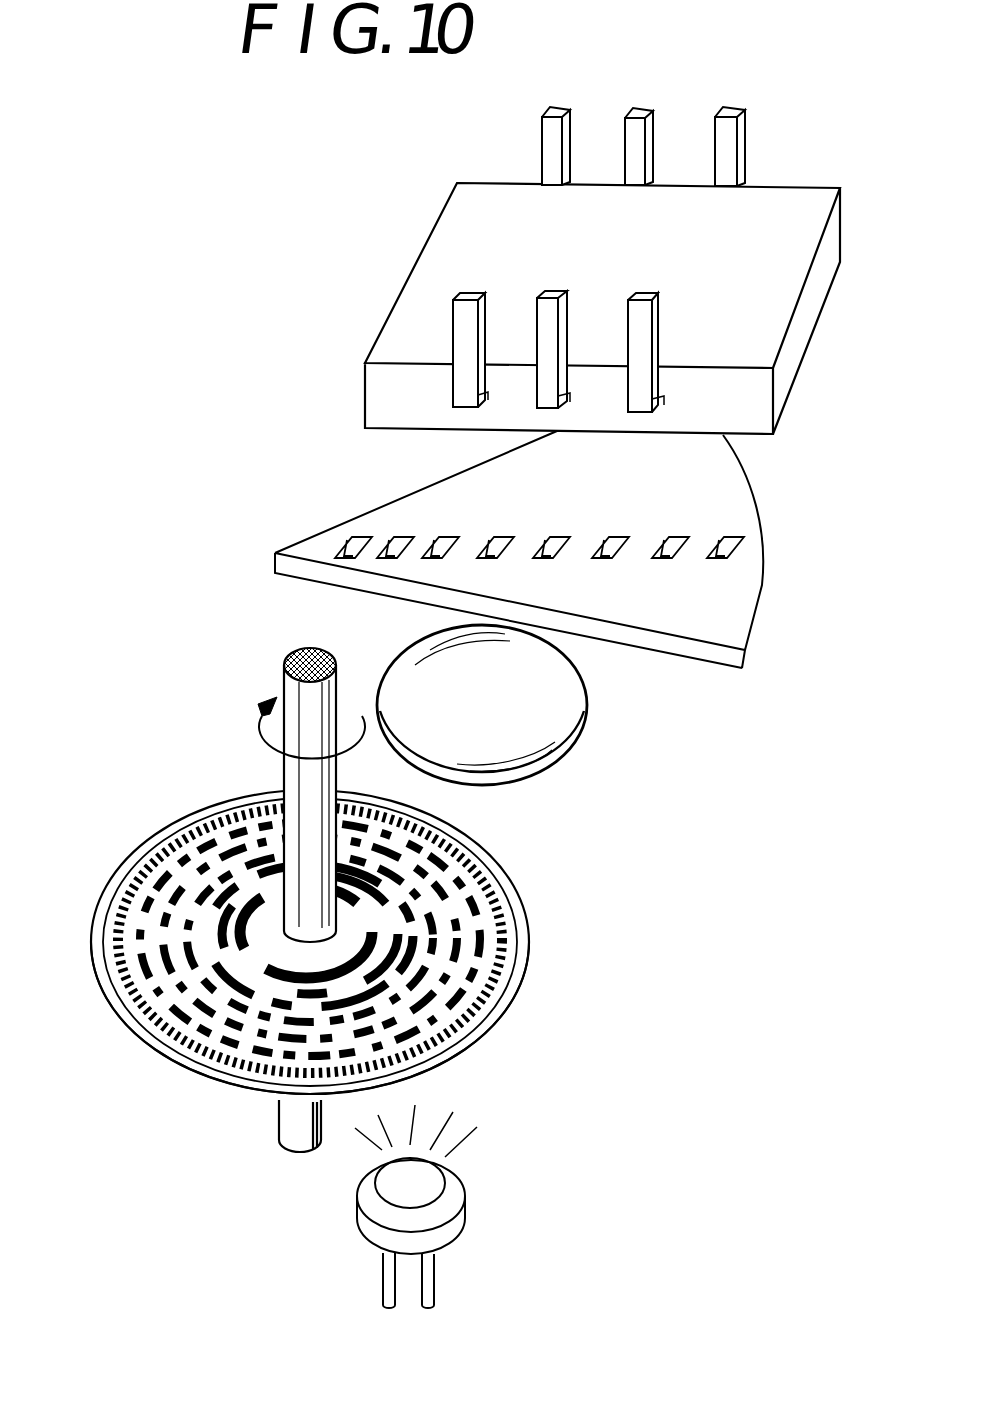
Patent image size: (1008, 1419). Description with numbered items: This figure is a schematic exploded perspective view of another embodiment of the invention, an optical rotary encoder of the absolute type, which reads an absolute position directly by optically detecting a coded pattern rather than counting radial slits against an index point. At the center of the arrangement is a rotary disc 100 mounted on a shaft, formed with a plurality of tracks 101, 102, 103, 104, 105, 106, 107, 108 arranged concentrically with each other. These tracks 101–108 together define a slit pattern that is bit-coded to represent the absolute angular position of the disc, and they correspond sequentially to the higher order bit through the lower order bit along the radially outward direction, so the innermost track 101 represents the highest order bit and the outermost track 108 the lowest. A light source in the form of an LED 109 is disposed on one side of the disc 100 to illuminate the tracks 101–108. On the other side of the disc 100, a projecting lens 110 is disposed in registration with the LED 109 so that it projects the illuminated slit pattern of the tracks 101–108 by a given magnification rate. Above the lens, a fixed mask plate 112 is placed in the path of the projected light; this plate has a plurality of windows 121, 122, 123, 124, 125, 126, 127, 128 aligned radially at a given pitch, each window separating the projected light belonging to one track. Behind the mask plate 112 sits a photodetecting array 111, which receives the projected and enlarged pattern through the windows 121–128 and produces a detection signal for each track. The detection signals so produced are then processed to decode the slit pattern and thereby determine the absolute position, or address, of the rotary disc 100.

The rotary disc 100 is at (522, 948).
The track 101 is at (373, 952).
The track 102 is at (242, 883).
The track 103 is at (222, 903).
The track 104 is at (192, 917).
The track 105 is at (170, 968).
The track 106 is at (190, 1010).
The track 107 is at (197, 1043).
The track 108 is at (187, 1043).
The LED 109 is at (460, 1225).
The projecting lens 110 is at (571, 730).
The photodetecting array 111 is at (787, 377).
The fixed mask plate 112 is at (754, 598).
The light receiving element 121 is at (353, 534).
The light receiving element 122 is at (400, 534).
The light receiving element 123 is at (448, 534).
The light receiving element 124 is at (503, 534).
The light receiving element 125 is at (560, 534).
The light receiving element 126 is at (623, 534).
The light receiving element 127 is at (680, 530).
The light receiving element 128 is at (740, 532).